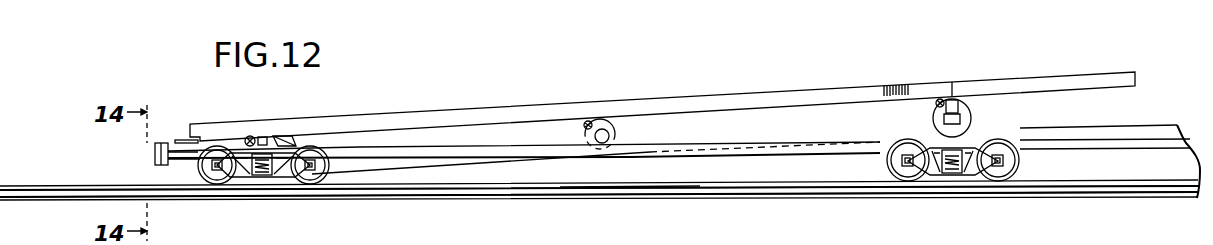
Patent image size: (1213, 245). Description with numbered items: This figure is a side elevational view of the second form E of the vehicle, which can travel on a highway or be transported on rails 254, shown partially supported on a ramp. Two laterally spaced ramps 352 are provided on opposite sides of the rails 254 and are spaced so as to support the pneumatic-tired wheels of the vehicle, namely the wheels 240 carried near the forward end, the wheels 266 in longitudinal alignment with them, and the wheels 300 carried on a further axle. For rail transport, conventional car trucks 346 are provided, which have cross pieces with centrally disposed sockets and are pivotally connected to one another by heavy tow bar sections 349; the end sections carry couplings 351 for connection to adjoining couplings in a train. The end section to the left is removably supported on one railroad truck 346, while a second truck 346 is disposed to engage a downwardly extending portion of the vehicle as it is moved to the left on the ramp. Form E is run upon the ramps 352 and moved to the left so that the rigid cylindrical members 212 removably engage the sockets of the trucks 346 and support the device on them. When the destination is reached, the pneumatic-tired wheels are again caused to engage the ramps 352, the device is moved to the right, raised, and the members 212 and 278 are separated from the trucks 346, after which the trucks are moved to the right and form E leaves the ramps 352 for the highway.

The second form of the vehicle E is at (728, 96).
The rigid cylindrical member 212 is at (262, 137).
The pneumatic-tired wheels 240 is at (290, 140).
The rails 254 is at (628, 187).
The pneumatic-tired wheels 266 is at (628, 141).
The rigid elongate cylindrical member 278 is at (958, 106).
The pneumatic-tired wheels 300 is at (972, 123).
The car trucks 346 is at (267, 180).
The tow bar sections 349 is at (187, 153).
The couplings 351 is at (155, 153).
The ramps 352 is at (458, 160).